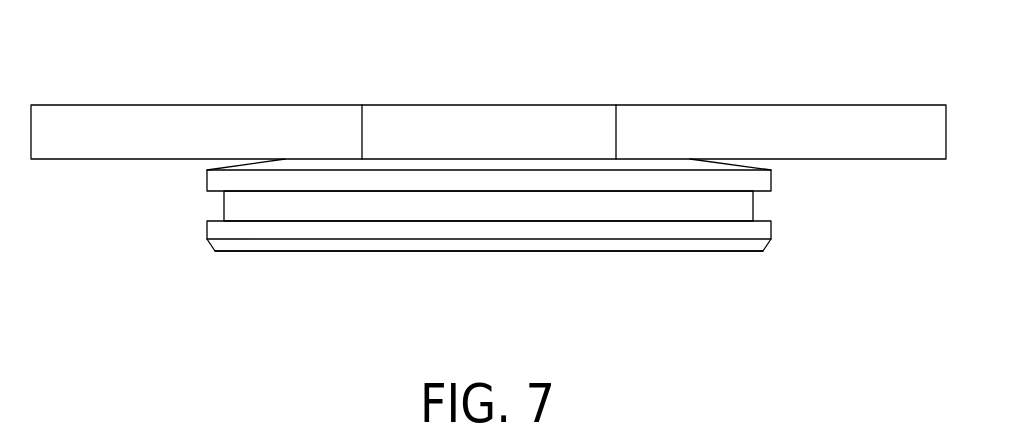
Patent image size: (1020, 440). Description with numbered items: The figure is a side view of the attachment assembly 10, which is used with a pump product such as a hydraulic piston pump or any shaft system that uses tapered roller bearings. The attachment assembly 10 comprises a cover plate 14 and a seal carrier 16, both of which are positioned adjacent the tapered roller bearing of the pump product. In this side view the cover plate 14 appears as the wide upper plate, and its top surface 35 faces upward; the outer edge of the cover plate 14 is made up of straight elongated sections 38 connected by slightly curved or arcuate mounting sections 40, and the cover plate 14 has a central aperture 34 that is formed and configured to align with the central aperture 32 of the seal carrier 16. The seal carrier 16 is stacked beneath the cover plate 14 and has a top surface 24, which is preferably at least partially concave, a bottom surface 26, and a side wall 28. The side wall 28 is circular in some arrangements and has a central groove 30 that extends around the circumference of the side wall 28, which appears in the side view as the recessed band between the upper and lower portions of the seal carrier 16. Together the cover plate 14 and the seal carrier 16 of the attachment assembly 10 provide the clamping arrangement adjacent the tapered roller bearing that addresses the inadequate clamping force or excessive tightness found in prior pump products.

The attachment assembly 10 is at (614, 62).
The cover plate 14 is at (214, 80).
The seal carrier 16 is at (392, 291).
The top surface 24 is at (567, 165).
The bottom surface 26 is at (266, 252).
The side wall 28 is at (772, 183).
The central groove 30 is at (753, 207).
The central aperture 32 is at (488, 252).
The central aperture 34 is at (448, 105).
The top surface 35 is at (358, 105).
The straight elongated section 38 is at (137, 141).
The arcuate mounting section 40 is at (510, 127).